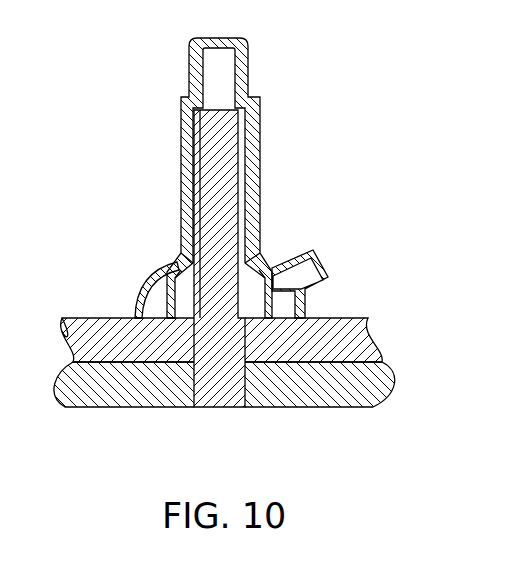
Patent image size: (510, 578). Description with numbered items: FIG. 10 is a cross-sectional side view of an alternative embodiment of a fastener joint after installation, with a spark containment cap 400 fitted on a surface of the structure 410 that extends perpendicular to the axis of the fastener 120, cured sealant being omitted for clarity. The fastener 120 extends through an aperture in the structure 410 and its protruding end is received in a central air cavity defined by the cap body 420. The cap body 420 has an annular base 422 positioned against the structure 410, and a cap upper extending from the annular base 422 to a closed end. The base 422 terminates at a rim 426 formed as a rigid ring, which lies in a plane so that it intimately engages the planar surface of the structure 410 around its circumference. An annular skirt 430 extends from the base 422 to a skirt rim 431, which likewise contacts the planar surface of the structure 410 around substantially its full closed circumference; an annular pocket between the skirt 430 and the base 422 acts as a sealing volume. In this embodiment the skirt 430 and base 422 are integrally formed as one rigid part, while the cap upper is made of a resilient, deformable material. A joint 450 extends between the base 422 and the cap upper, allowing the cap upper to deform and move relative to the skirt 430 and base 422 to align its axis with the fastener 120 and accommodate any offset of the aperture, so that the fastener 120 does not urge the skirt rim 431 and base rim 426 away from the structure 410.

The spark containment cap 400 is at (325, 62).
The structure 410 is at (330, 388).
The fastener 120 is at (217, 383).
The cap body 420 is at (250, 137).
The annular base 422 is at (165, 292).
The annular skirt 430 is at (137, 303).
The skirt rim 431 is at (137, 318).
The rim 426 is at (168, 318).
The joint 450 is at (275, 230).